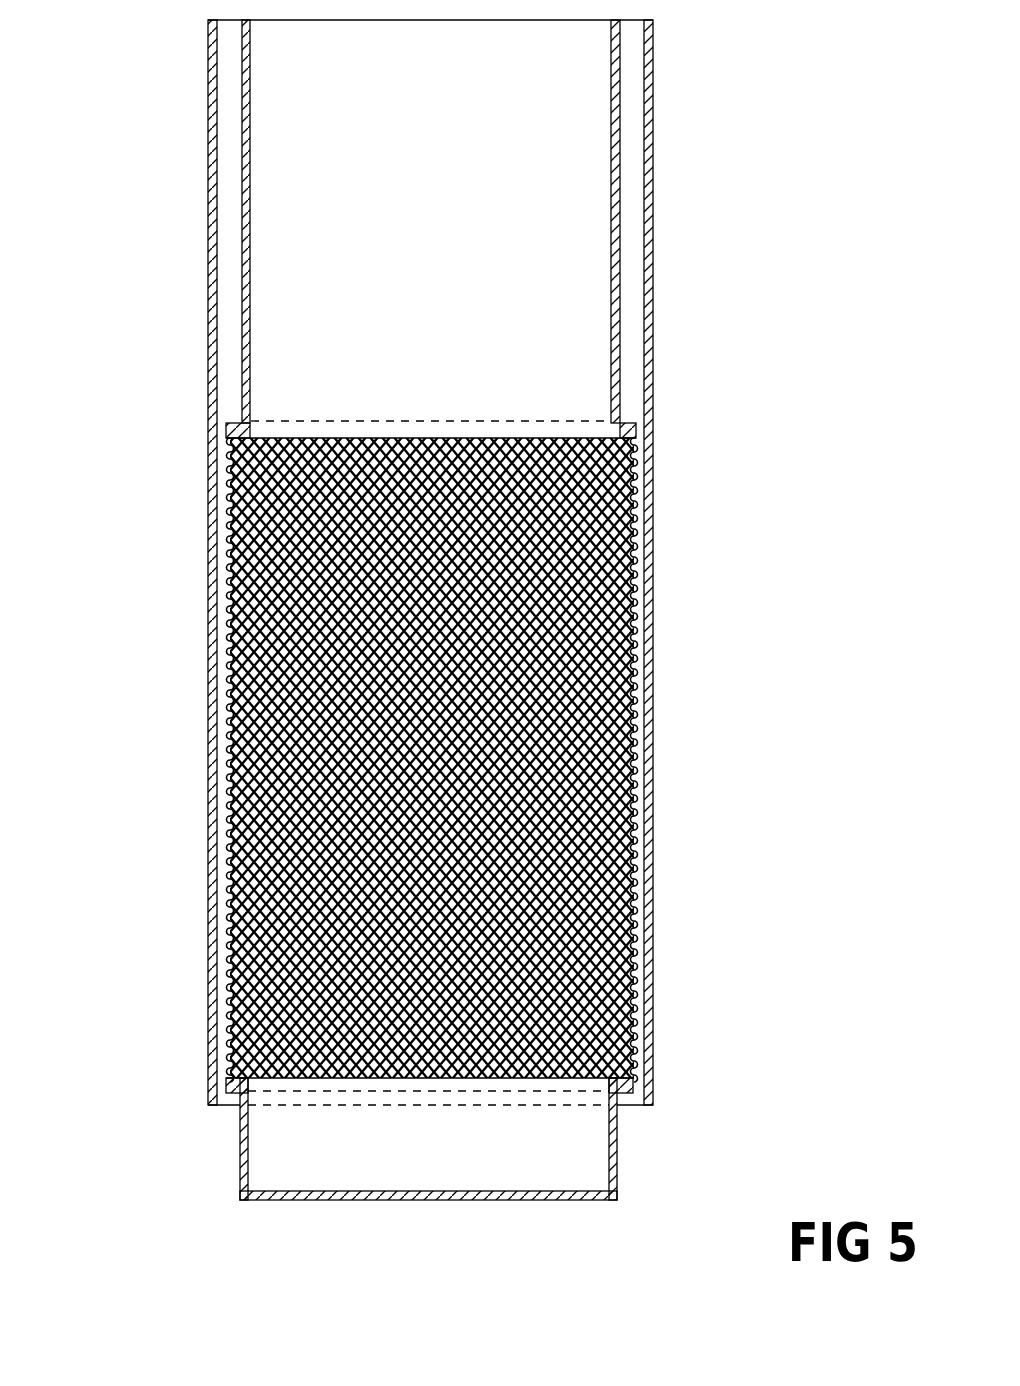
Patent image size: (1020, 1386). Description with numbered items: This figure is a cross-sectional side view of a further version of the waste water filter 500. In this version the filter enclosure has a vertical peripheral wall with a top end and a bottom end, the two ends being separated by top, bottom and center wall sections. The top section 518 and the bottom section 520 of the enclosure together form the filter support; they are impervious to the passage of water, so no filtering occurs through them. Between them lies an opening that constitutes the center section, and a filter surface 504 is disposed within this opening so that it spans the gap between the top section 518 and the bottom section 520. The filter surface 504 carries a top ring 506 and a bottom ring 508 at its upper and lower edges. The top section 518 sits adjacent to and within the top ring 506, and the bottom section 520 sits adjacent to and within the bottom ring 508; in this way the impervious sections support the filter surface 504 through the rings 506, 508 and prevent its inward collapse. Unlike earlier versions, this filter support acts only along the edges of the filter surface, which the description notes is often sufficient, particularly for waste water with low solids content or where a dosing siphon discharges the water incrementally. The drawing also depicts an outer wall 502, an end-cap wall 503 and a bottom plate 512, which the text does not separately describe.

The waste water filter 500 is at (160, 392).
The outer tube 502 is at (645, 883).
The end cap wall 503 is at (622, 1110).
The filter surface 504 is at (627, 738).
The top ring 506 is at (628, 423).
The bottom ring 508 is at (627, 1070).
The end cap bottom plate 512 is at (495, 1198).
The top section 518 is at (228, 147).
The bottom section 520 is at (223, 1122).